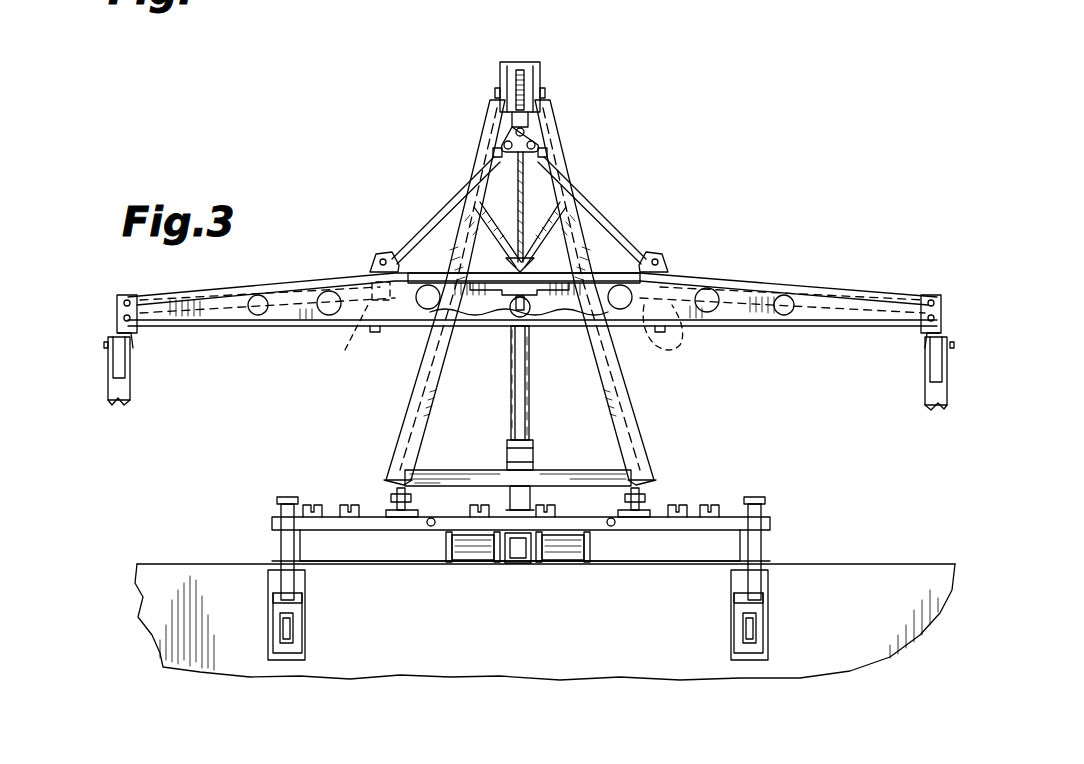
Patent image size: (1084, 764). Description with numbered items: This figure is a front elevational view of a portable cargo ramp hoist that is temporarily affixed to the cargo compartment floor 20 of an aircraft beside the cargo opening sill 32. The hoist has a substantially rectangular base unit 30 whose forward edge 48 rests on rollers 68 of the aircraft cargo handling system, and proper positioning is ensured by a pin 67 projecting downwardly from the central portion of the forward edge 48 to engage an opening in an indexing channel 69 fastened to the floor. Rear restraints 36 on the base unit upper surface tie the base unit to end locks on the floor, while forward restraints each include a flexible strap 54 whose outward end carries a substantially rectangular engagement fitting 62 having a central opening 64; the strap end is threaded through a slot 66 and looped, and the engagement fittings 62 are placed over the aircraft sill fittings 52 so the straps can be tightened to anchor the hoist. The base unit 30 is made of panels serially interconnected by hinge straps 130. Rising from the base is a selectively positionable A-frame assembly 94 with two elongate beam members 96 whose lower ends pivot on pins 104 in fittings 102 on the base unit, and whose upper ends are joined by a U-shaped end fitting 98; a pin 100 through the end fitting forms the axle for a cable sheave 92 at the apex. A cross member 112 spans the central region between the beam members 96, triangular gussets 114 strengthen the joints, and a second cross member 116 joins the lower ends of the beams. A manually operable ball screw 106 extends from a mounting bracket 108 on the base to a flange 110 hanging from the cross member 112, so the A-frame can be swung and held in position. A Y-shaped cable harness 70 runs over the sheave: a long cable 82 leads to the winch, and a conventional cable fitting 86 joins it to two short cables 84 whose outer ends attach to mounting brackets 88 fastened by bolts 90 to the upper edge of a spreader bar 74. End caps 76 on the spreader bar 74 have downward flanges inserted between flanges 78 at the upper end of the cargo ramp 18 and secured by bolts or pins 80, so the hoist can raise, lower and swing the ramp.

The cargo ramp 18 is at (130, 398).
The cargo compartment floor 20 is at (838, 562).
The base unit 30 is at (738, 518).
The cargo opening sill 32 is at (380, 566).
The rear restraints 36 is at (345, 497).
The forward edge 48 is at (352, 533).
The aircraft sill fittings 52 is at (283, 633).
The flexible strap 54 is at (280, 538).
The engagement fitting 62 is at (298, 650).
The central opening 64 is at (296, 615).
The slot 66 is at (302, 600).
The pin 67 is at (522, 518).
The rollers 68 is at (475, 558).
The indexing channel 69 is at (520, 562).
The cable harness 70 is at (612, 200).
The spreader bar 74 is at (728, 272).
The end caps 76 is at (117, 312).
The cargo ramp flanges 78 is at (108, 373).
The bolts or pins 80 is at (130, 345).
The cable 82 is at (524, 213).
The cables 84 is at (438, 215).
The cable fitting 86 is at (538, 135).
The mounting brackets 88 is at (370, 266).
The bolts 90 is at (519, 333).
The cable sheave 92 is at (528, 88).
The A-frame assembly 94 is at (432, 396).
The beam members 96 is at (408, 408).
The end fitting 98 is at (514, 64).
The pin 100 is at (545, 94).
The fittings 102 is at (388, 511).
The pins 104 is at (398, 494).
The ball screw 106 is at (529, 402).
The mounting bracket 108 is at (508, 482).
The flange 110 is at (537, 318).
The cross member 112 is at (486, 296).
The triangular gussets 114 is at (482, 218).
The second cross member 116 is at (572, 470).
The hinge straps 130 is at (431, 532).